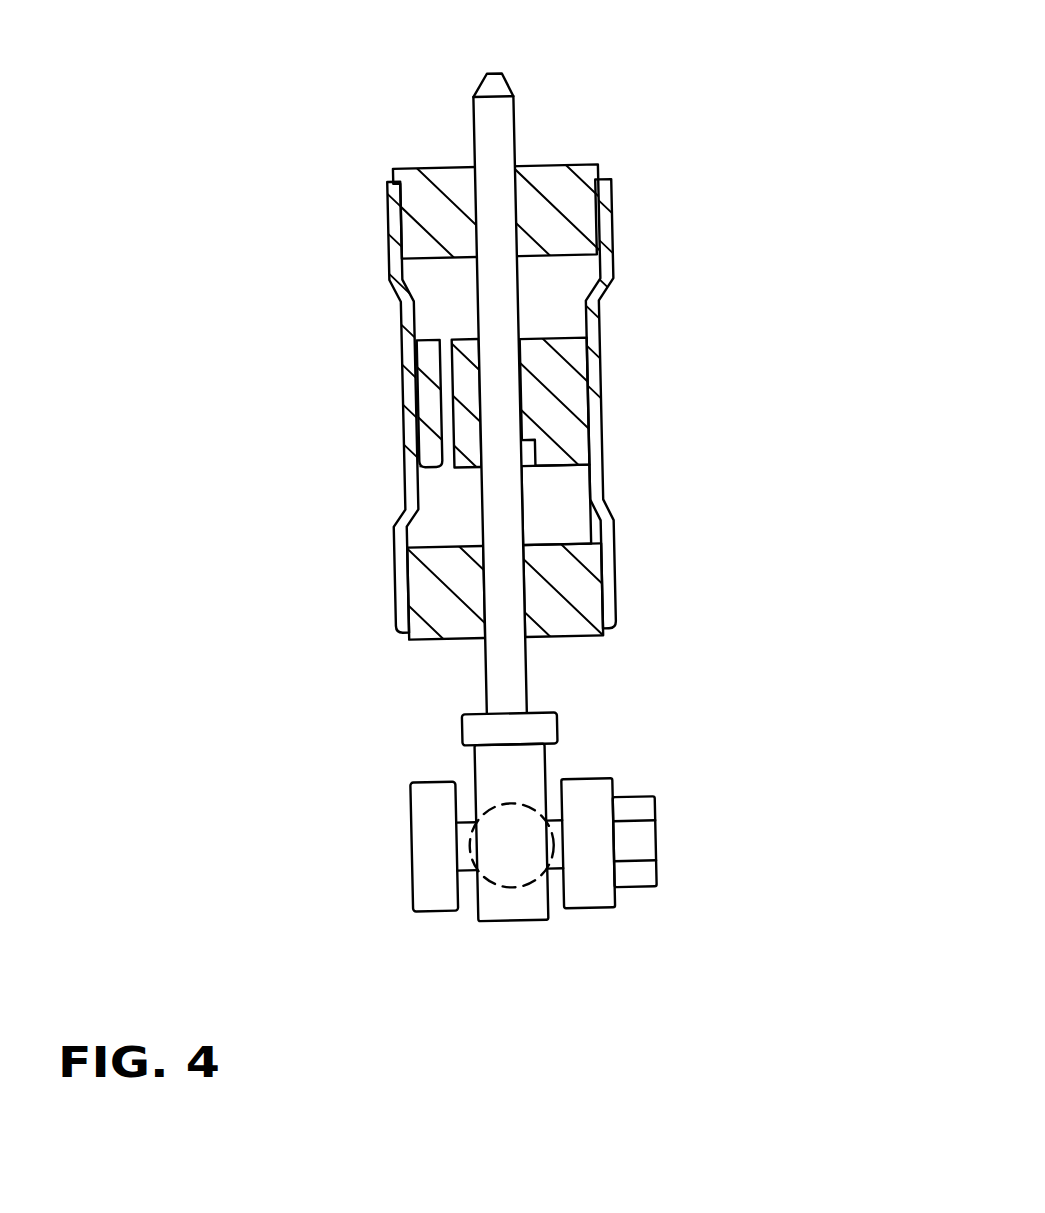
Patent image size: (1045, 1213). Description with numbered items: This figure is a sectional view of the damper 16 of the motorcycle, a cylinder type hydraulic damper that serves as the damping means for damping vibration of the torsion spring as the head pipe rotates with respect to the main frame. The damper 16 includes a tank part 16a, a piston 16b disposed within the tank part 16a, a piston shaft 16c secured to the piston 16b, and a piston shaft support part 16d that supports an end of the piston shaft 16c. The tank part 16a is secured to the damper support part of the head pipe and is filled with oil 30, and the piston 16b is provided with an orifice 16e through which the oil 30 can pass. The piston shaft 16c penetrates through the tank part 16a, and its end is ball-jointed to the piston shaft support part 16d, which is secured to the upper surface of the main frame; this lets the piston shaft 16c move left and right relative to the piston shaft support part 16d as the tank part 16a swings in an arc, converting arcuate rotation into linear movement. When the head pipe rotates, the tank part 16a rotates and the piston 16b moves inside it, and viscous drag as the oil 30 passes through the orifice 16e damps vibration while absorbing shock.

The damper 16 is at (592, 640).
The tank part 16a is at (605, 243).
The piston 16b is at (567, 404).
The piston shaft 16c is at (511, 136).
The piston shaft support part 16d is at (589, 895).
The orifice 16e is at (464, 338).
The oil 30 is at (570, 524).